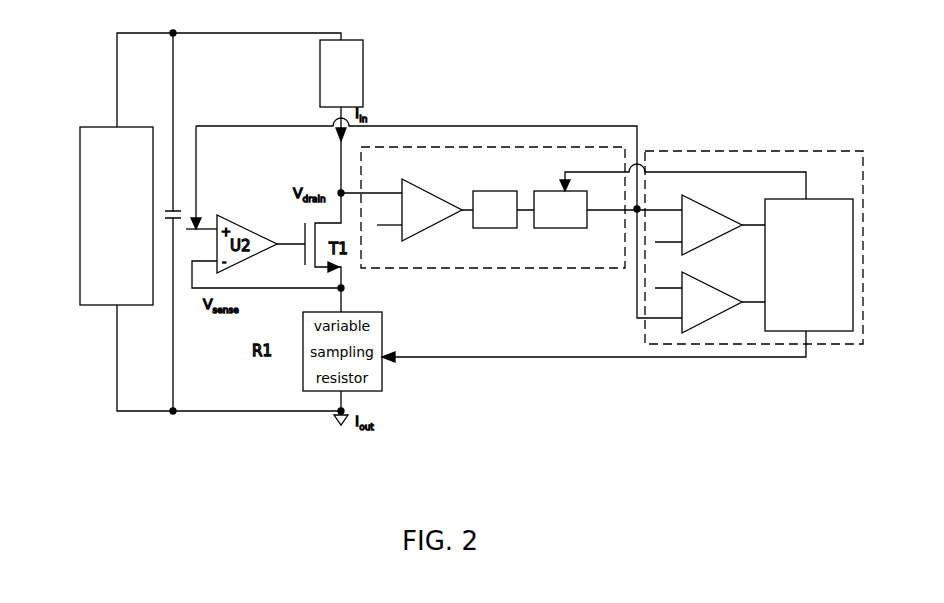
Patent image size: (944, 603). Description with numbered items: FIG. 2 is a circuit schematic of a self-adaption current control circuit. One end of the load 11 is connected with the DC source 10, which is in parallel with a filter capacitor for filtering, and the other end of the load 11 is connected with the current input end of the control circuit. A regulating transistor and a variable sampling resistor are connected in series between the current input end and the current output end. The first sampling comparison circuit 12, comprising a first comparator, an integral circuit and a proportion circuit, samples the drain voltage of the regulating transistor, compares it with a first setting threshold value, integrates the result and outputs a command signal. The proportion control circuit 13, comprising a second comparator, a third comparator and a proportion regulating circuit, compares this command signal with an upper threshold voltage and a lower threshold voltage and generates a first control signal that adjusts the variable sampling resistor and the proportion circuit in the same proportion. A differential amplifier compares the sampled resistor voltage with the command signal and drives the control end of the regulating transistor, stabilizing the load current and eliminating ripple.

The DC source 10 is at (100, 127).
The load 11 is at (363, 73).
The first sampling comparison circuit 12 is at (420, 270).
The proportion control circuit 13 is at (765, 151).